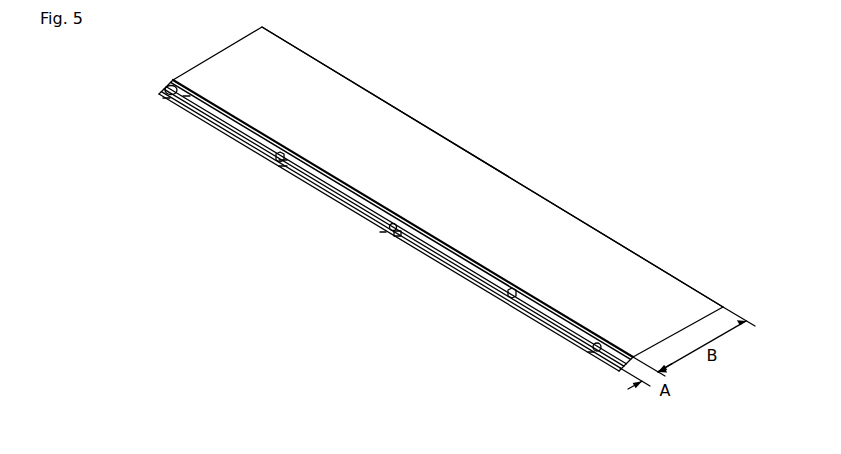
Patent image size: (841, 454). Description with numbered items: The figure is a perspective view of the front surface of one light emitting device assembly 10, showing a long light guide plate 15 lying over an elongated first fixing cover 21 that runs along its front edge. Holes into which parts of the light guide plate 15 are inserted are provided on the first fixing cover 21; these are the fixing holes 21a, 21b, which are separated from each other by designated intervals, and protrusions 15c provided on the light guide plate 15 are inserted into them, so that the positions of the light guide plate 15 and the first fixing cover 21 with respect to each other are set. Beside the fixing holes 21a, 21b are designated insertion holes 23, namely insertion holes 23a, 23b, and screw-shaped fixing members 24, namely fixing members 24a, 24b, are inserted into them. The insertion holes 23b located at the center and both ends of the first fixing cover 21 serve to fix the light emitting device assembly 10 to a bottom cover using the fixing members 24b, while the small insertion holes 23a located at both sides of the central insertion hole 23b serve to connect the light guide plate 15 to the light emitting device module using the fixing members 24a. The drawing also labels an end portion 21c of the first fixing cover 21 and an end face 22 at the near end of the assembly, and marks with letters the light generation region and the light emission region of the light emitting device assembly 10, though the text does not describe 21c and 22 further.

The light emitting device assembly 10 is at (430, 108).
The light guide plate 15 is at (537, 225).
The protrusion 15c is at (398, 237).
The first fixing cover 21 is at (470, 265).
The fixing hole 21a is at (280, 151).
The fixing hole 21b is at (395, 223).
The rail end portion 21c is at (186, 90).
The rail end face 22 is at (625, 368).
The insertion hole 23 is at (131, 175).
The small insertion hole 23a is at (283, 161).
The insertion hole 23b is at (186, 98).
The fixing member 24 is at (215, 232).
The fixing member 24a is at (283, 168).
The fixing member 24b is at (166, 98).